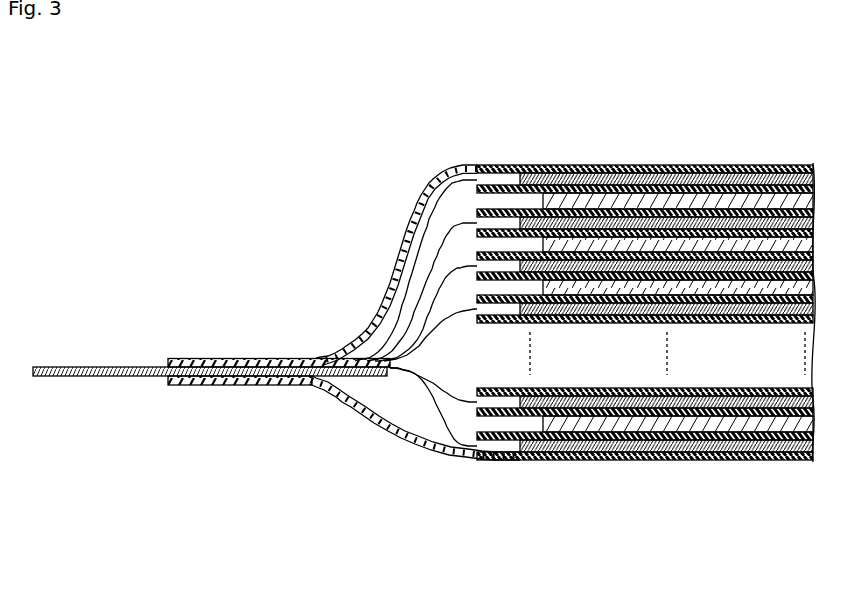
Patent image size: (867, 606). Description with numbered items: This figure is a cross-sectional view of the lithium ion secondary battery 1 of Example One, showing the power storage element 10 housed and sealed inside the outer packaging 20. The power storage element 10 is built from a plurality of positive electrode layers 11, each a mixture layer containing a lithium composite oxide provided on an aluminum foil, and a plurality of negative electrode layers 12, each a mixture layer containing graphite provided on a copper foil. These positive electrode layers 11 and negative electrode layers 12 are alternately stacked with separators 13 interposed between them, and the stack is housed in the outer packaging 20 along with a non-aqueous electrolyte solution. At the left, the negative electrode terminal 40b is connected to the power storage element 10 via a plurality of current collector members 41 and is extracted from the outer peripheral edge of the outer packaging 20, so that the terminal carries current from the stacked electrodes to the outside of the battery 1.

The lithium ion secondary battery 1 is at (555, 312).
The power storage element 10 is at (377, 395).
The positive electrode layer 11 is at (748, 188).
The negative electrode layer 12 is at (643, 173).
The separator 13 is at (502, 185).
The outer packaging 20 is at (210, 386).
The negative electrode terminal 40b is at (100, 367).
The current collector member 41 is at (443, 407).